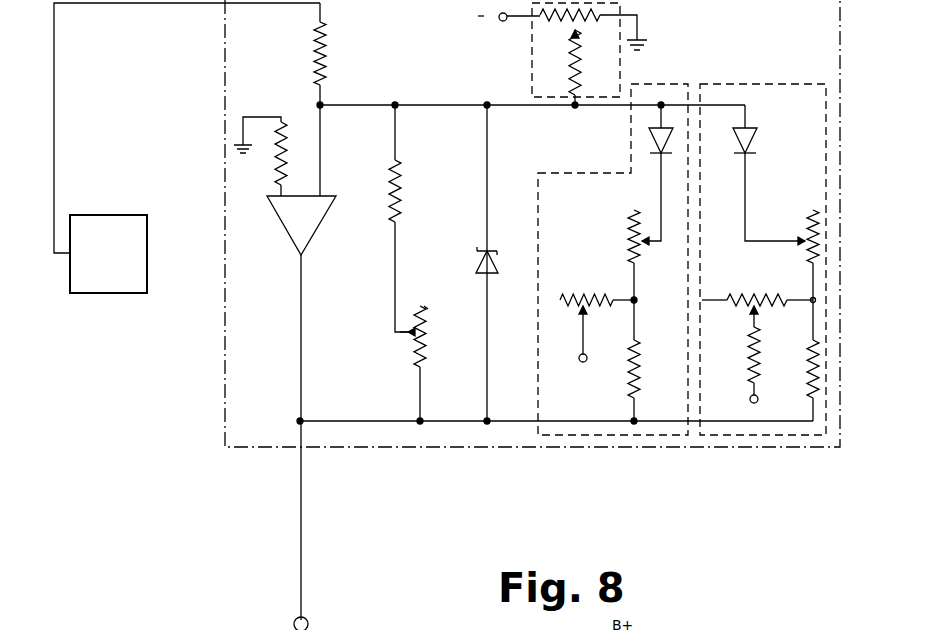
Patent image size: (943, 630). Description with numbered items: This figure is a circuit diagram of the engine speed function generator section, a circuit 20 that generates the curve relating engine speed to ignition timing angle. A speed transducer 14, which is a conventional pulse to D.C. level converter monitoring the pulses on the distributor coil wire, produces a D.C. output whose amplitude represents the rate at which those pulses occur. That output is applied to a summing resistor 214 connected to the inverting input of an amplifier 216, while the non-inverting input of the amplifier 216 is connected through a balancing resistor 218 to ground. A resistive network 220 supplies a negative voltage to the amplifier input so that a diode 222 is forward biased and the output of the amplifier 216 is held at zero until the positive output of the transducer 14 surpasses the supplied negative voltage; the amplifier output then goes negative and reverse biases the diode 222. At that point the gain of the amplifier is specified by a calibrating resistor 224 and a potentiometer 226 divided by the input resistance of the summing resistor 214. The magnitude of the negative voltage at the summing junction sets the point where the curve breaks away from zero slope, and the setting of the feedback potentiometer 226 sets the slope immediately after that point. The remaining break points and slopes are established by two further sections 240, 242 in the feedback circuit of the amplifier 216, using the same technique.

The speed transducer 14 is at (148, 222).
The circuit 20 is at (618, 449).
The summing resistor 214 is at (330, 48).
The amplifier 216 is at (316, 233).
The balancing resistor 218 is at (274, 154).
The resistive network 220 is at (531, 52).
The diode 222 is at (478, 270).
The calibrating resistor 224 is at (400, 199).
The potentiometer 226 is at (430, 350).
The section 240 is at (655, 83).
The section 242 is at (805, 83).